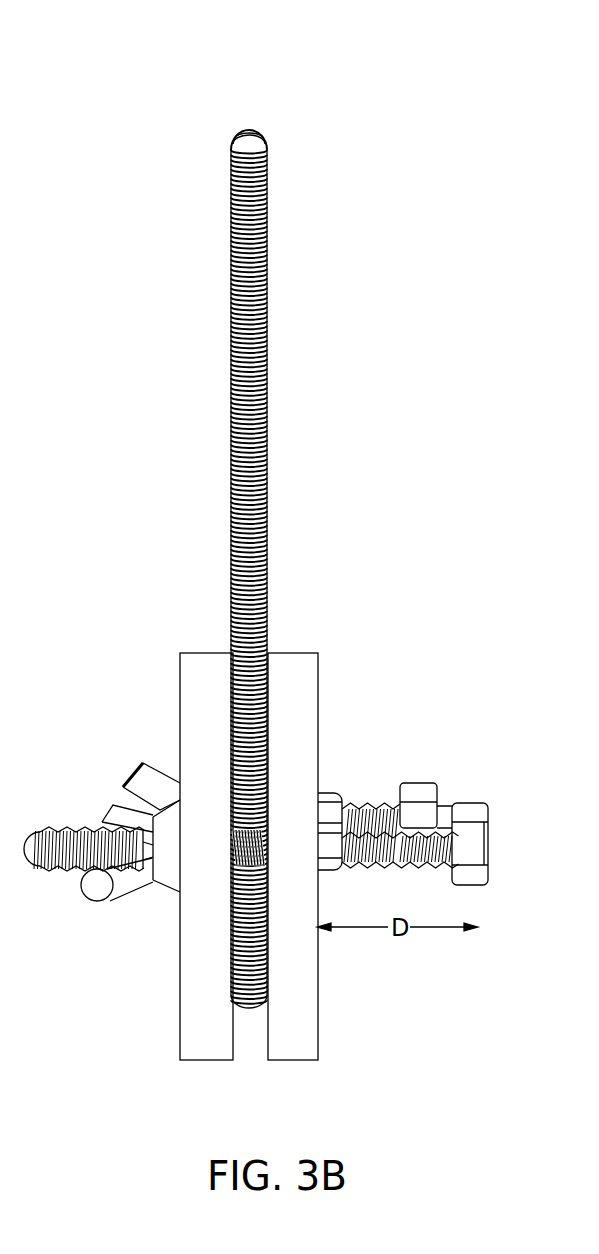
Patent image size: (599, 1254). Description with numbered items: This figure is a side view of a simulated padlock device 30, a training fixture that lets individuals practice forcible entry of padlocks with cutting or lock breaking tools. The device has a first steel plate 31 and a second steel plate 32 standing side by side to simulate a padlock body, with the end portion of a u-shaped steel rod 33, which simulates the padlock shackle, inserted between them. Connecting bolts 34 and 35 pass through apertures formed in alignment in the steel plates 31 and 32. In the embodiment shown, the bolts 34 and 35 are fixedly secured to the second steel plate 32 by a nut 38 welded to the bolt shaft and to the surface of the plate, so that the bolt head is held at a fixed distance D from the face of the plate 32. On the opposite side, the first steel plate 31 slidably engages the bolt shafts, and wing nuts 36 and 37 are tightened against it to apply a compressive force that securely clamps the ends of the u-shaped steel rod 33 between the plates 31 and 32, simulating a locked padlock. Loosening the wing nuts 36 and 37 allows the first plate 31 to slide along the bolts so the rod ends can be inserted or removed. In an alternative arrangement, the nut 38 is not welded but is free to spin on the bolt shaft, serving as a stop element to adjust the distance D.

The simulated padlock device 30 is at (438, 159).
The first steel plate 31 is at (180, 682).
The second steel plate 32 is at (318, 693).
The u-shaped steel rod 33 is at (267, 185).
The connecting bolt 34 is at (468, 885).
The connecting bolt 35 is at (422, 783).
The wing nut 36 is at (97, 903).
The wing nut 37 is at (141, 765).
The nut 38 is at (334, 870).